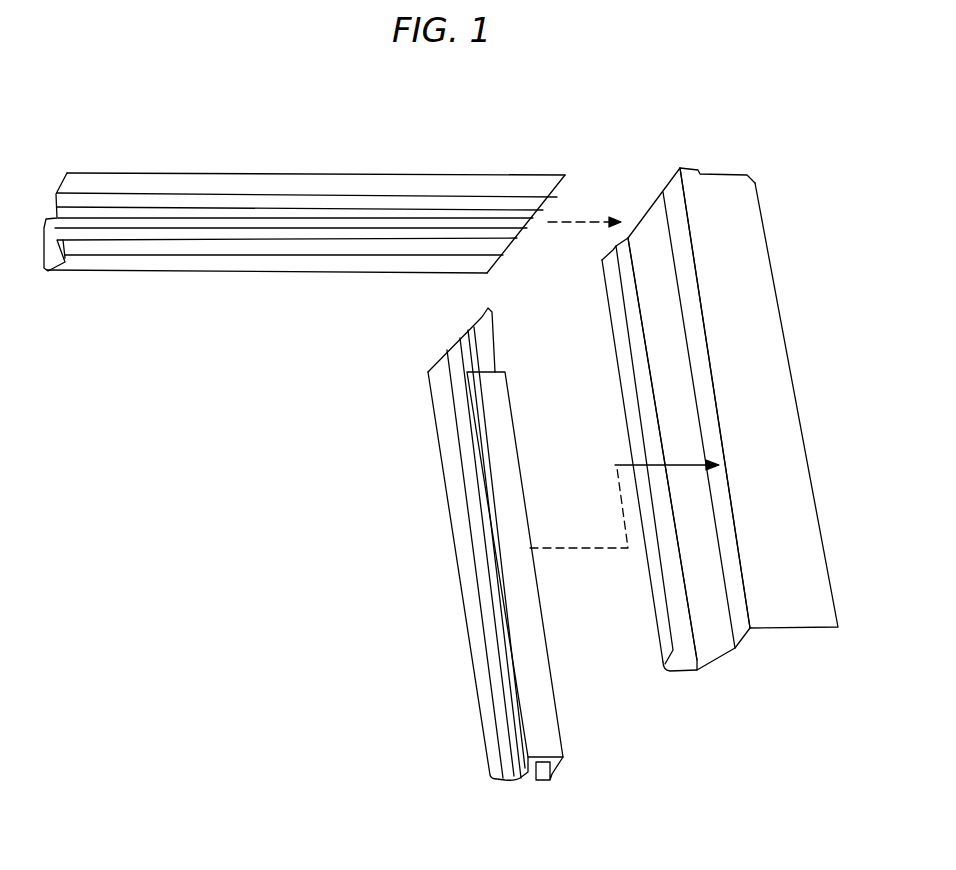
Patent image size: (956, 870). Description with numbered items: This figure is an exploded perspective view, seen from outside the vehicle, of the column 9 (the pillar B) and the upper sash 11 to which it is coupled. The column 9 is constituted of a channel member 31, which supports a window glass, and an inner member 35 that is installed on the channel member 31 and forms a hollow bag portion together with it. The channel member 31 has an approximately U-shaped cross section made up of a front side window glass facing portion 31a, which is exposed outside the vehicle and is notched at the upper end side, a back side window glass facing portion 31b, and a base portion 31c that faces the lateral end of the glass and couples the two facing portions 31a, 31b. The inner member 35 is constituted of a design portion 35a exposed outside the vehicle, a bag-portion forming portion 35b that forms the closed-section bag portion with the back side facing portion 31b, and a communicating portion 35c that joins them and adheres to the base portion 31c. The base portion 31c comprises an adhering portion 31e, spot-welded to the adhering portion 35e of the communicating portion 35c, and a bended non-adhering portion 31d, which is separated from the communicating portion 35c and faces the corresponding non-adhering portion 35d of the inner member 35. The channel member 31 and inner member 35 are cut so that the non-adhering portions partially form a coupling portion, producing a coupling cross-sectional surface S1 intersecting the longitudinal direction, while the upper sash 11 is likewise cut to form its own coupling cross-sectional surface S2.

The upper sash 11 is at (343, 160).
The column 9 is at (827, 672).
The channel member 31 is at (564, 487).
The front side window glass facing portion 31a is at (538, 668).
The back side window glass facing portion 31b is at (512, 783).
The base portion 31c is at (414, 533).
The non-adhering portion 31d is at (482, 316).
The adhering portion 31e is at (492, 345).
The inner member 35 is at (709, 446).
The design portion 35a is at (805, 532).
The bag-portion forming portion 35b is at (680, 672).
The communicating portion 35c is at (745, 419).
The non-adhering portion 35d is at (673, 188).
The adhering portion 35e is at (690, 288).
The coupling cross-sectional surface S1 is at (447, 350).
The coupling cross-sectional surface S2 is at (550, 203).